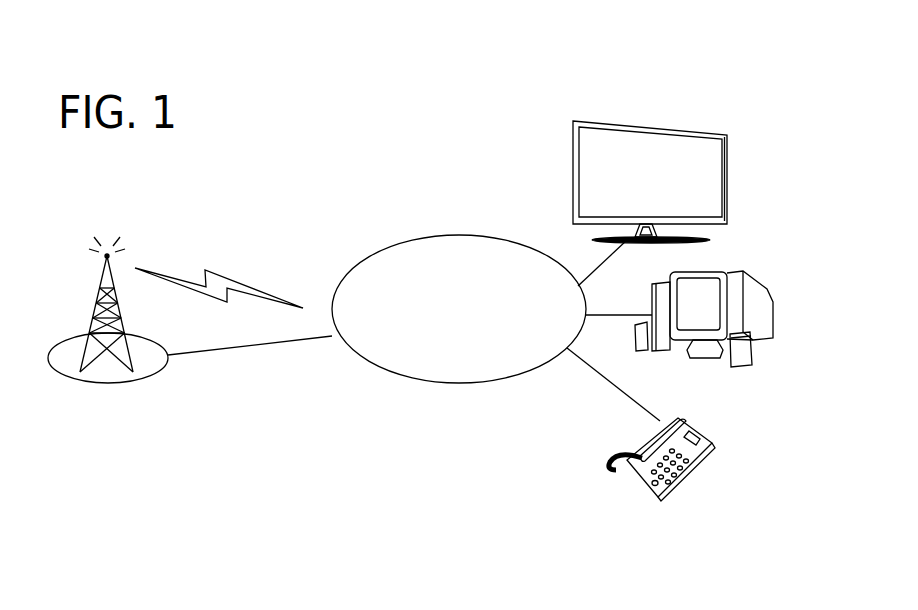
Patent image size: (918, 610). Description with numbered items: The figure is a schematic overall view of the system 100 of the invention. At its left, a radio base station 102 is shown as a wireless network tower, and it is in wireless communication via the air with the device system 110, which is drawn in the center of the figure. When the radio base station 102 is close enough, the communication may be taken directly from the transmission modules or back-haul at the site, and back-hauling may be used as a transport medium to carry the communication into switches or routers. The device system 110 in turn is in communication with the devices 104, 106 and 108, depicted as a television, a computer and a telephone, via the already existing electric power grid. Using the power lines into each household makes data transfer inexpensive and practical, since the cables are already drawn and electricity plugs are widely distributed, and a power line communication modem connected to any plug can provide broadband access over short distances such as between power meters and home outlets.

The system 100 is at (380, 122).
The radio base station 102 is at (108, 390).
The device 104 is at (727, 180).
The device 106 is at (760, 294).
The device 108 is at (712, 433).
The device system 110 is at (457, 383).